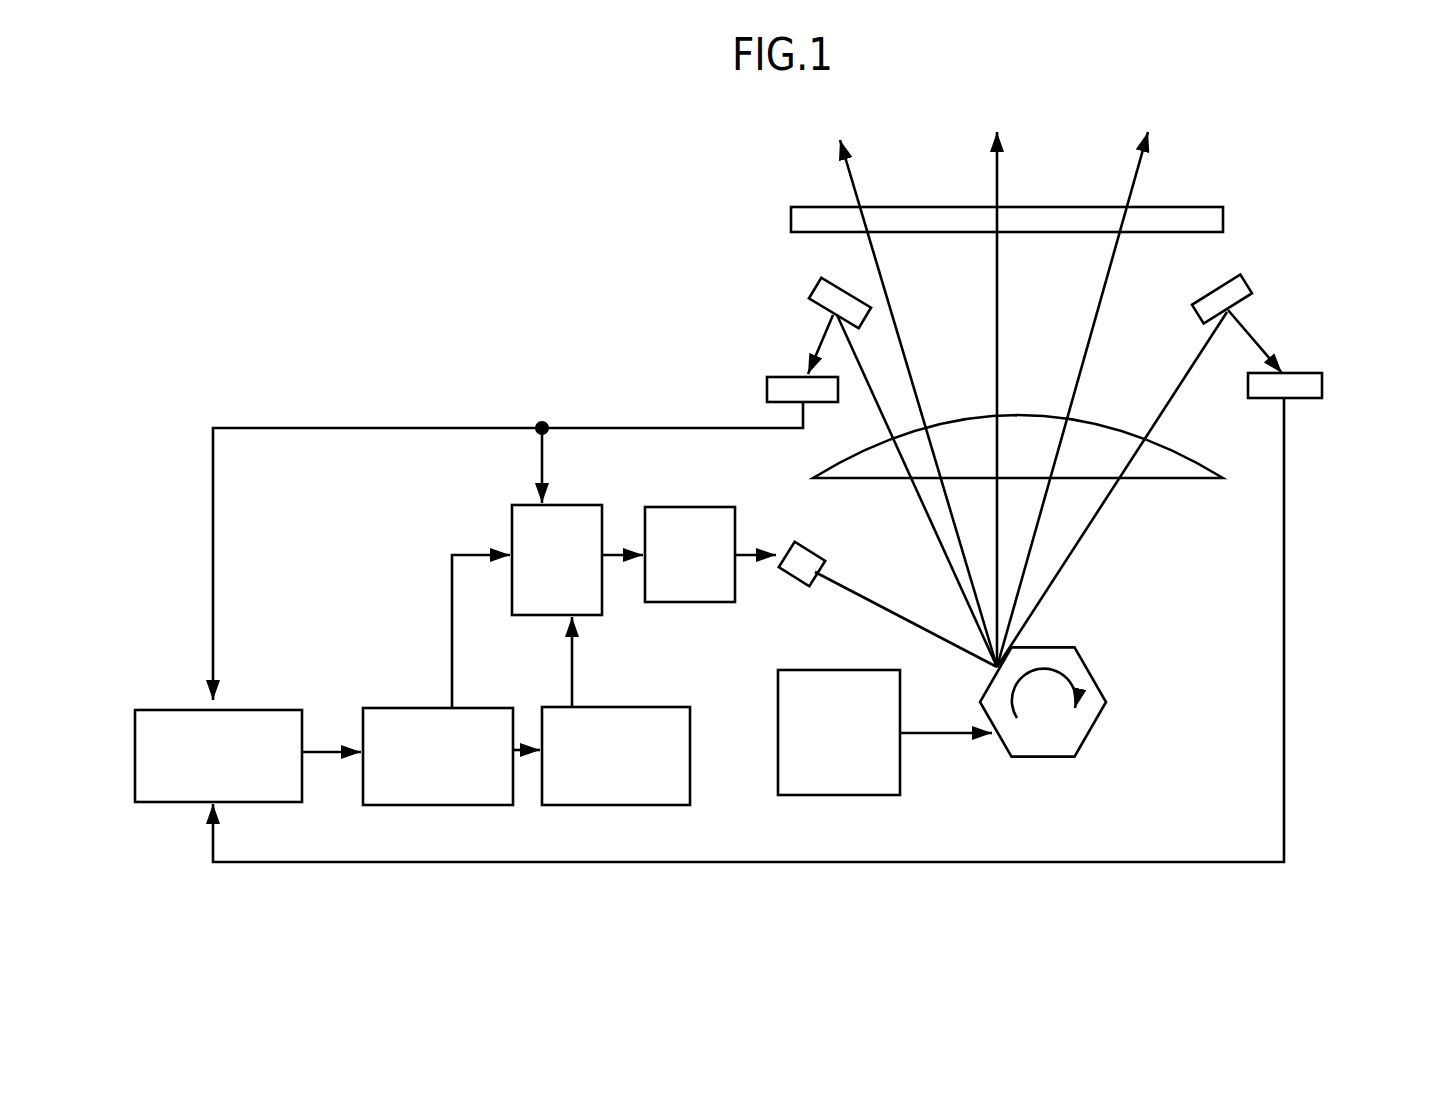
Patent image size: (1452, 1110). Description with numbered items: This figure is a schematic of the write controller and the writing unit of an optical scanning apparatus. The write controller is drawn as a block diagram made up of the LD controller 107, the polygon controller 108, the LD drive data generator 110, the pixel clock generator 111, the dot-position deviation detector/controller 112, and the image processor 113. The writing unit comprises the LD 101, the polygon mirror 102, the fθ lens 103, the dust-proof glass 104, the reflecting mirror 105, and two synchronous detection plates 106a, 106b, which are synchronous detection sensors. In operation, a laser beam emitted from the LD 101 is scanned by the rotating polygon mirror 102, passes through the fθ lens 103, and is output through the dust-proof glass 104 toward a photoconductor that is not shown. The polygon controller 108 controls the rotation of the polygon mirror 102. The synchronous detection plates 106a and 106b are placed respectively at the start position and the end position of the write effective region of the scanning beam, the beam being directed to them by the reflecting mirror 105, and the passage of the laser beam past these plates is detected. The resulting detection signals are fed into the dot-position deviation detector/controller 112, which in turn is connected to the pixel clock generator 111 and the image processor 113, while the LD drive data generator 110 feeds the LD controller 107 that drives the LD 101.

The LD 101 is at (808, 550).
The polygon mirror 102 is at (1077, 648).
The fθ lens 103 is at (1167, 465).
The dust-proof glass 104 is at (1155, 210).
The reflecting mirror 105 is at (1292, 281).
The synchronous detection plate 106a is at (767, 388).
The synchronous detection plate 106b is at (1322, 393).
The LD controller 107 is at (728, 475).
The polygon controller 108 is at (832, 680).
The LD drive data generator 110 is at (520, 504).
The pixel clock generator 111 is at (492, 708).
The dot-position deviation detector/controller 112 is at (283, 710).
The image processor 113 is at (662, 712).